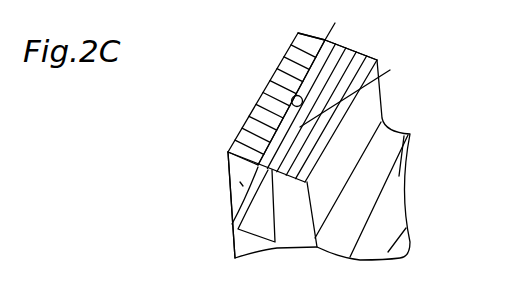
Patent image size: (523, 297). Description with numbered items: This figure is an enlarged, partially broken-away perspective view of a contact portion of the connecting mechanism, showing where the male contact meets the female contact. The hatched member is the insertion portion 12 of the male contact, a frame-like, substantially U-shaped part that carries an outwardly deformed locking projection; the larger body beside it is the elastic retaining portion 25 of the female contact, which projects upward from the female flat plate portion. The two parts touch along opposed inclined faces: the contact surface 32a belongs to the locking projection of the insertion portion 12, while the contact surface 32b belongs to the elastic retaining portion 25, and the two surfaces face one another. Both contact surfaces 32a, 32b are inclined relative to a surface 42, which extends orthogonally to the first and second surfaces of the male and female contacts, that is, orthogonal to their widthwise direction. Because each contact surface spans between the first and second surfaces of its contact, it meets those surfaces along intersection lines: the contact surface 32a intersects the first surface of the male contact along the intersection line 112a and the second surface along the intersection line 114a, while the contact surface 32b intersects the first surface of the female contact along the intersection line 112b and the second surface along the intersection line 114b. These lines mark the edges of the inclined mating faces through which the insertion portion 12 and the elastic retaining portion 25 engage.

The insertion portion 12 is at (258, 100).
The elastic retaining portion 25 is at (300, 125).
The contact surface 32a is at (297, 130).
The contact surface 32b is at (390, 70).
The surface 42 is at (248, 173).
The intersection line 112a is at (325, 39).
The intersection line 112b is at (326, 40).
The intersection line 114a is at (247, 202).
The intersection line 114b is at (248, 215).